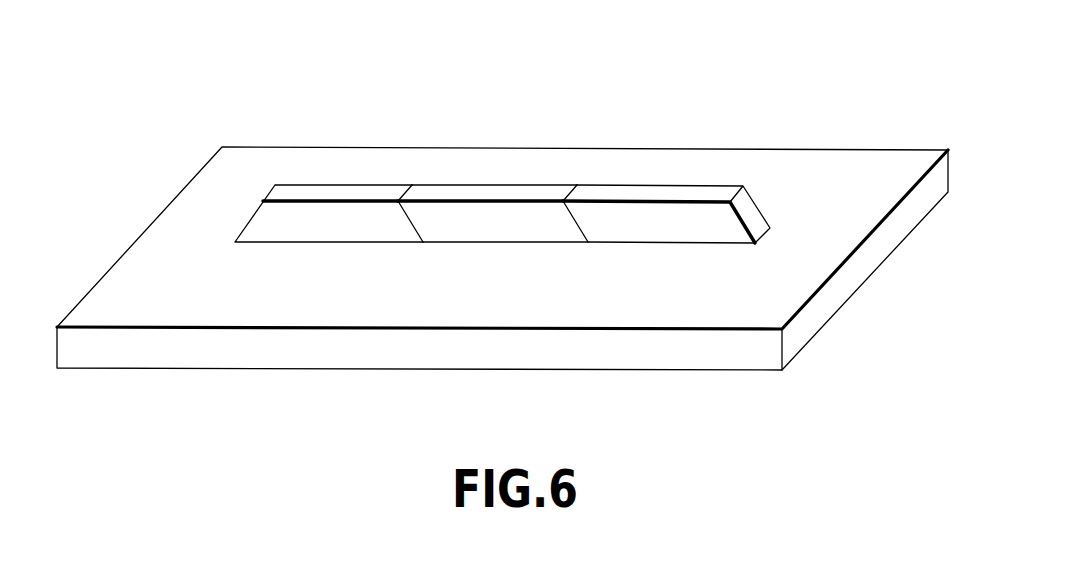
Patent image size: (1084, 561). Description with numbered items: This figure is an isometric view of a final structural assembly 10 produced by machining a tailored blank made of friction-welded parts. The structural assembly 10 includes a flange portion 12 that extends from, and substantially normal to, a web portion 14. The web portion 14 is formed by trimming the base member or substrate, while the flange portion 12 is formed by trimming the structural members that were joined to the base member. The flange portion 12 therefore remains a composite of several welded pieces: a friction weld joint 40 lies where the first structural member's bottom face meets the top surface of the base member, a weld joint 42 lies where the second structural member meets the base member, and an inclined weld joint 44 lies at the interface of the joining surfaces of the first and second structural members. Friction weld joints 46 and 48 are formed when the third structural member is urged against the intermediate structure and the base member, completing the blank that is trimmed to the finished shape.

The structural assembly 10 is at (503, 221).
The flange portion 12 is at (592, 260).
The web portion 14 is at (805, 347).
The friction weld joint 40 is at (283, 242).
The weld joint 42 is at (520, 242).
The inclined weld joint 44 is at (413, 227).
The friction weld joint 46 is at (577, 215).
The friction weld joint 48 is at (680, 242).